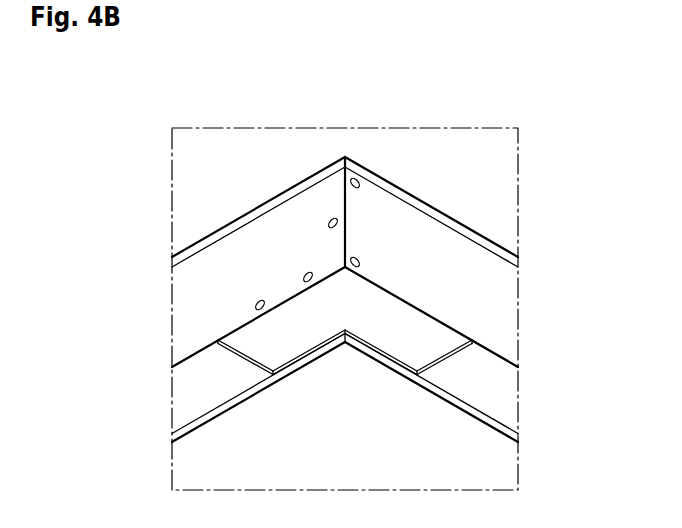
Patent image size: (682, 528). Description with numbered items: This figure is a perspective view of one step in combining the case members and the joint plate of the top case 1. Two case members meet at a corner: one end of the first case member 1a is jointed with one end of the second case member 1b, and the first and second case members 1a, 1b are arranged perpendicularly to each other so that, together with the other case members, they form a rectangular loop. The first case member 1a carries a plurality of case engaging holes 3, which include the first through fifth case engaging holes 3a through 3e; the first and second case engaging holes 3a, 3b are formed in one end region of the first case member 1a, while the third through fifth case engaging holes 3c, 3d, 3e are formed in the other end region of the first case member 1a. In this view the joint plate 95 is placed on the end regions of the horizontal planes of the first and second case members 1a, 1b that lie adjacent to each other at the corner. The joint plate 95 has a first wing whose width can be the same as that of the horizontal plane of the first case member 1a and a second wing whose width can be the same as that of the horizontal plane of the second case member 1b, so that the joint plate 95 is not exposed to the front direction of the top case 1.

The top case 1 is at (455, 201).
The first case member 1a is at (480, 238).
The second case member 1b is at (210, 238).
The case engaging holes 3 is at (410, 74).
The first case engaging hole 3a is at (357, 179).
The second case engaging hole 3b is at (360, 258).
The third case engaging hole 3c is at (331, 220).
The fourth case engaging hole 3d is at (306, 275).
The fifth case engaging hole 3e is at (259, 300).
The joint plate 95 is at (398, 308).